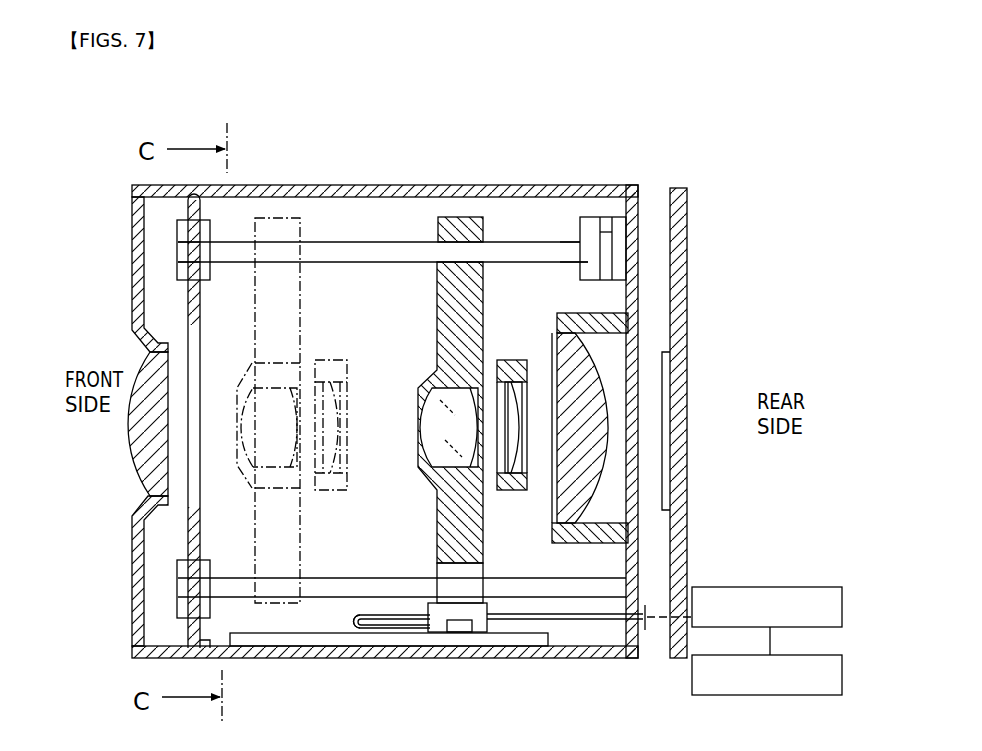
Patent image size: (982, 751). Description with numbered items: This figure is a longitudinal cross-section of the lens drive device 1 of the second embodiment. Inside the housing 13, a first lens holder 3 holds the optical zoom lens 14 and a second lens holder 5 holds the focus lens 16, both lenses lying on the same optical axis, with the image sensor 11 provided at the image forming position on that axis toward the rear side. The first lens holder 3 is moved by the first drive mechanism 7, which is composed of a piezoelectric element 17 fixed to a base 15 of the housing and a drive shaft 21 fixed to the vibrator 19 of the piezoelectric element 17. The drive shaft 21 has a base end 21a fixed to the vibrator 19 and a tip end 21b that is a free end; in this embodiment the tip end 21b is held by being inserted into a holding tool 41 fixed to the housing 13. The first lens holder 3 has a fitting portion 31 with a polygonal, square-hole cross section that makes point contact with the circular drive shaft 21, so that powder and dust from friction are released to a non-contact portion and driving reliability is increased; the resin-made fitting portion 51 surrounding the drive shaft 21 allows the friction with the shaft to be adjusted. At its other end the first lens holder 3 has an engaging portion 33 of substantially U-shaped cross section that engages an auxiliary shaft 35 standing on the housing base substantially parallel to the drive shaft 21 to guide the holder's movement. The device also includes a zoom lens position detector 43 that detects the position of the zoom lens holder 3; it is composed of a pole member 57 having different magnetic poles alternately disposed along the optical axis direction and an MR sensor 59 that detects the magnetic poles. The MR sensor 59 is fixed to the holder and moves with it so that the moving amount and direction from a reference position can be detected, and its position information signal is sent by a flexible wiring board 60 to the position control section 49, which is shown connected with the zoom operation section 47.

The lens drive device 1 is at (316, 152).
The first lens holder 3 is at (450, 218).
The second lens holder 5 is at (517, 360).
The first drive mechanism 7 is at (542, 214).
The image sensor 11 is at (671, 392).
The housing 13 is at (253, 184).
The optical zoom lens 14 is at (422, 455).
The base 15 is at (641, 200).
The focus lens 16 is at (515, 432).
The piezoelectric element 17 is at (600, 198).
The vibrator 19 is at (606, 250).
The drive shaft 21 is at (503, 242).
The base end 21a is at (588, 262).
The tip end 21b is at (177, 272).
The fitting portion 31 is at (457, 270).
The engaging portion 33 is at (455, 607).
The auxiliary shaft 35 is at (547, 590).
The holding tool 41 is at (177, 230).
The zoom lens position detector 43 is at (397, 607).
The zoom operation section 47 is at (842, 668).
The position control section 49 is at (842, 605).
The fitting portion 51 is at (467, 232).
The pole member 57 is at (277, 642).
The MR sensor 59 is at (466, 630).
The flexible wiring board 60 is at (349, 622).